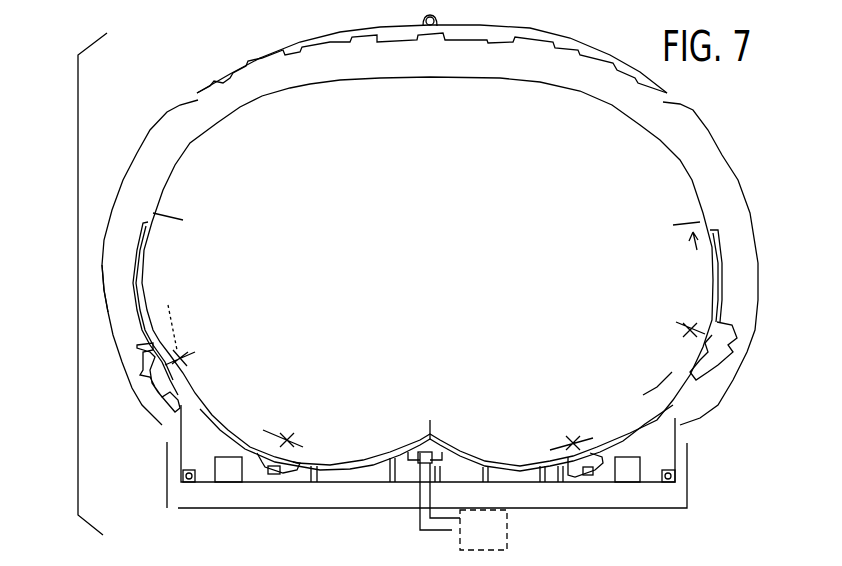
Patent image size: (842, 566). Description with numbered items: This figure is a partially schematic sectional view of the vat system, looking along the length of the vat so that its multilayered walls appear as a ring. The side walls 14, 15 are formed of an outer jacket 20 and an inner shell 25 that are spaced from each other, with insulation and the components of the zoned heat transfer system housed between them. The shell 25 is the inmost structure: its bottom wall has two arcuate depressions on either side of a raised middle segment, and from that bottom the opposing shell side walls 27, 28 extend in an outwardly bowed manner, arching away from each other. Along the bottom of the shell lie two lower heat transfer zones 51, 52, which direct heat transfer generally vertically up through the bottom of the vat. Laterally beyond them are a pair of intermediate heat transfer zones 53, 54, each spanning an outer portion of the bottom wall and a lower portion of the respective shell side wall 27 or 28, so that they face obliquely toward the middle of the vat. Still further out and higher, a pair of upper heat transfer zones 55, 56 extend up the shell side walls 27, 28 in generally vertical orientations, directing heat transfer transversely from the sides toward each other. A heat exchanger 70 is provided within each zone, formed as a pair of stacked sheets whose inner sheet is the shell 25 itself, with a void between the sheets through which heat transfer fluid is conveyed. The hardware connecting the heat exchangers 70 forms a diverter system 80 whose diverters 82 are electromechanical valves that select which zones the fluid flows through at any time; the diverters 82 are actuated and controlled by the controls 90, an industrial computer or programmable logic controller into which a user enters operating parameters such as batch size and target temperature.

The side wall 14 is at (122, 195).
The side wall 15 is at (743, 203).
The outer jacket 20 is at (722, 130).
The inner shell 25 is at (662, 135).
The shell side wall 27 is at (160, 203).
The shell side wall 28 is at (703, 212).
The lower heat transfer zone 51 is at (300, 445).
The lower heat transfer zone 52 is at (565, 447).
The intermediate heat transfer zone 53 is at (188, 368).
The intermediate heat transfer zone 54 is at (575, 445).
The upper heat transfer zone 55 is at (172, 234).
The upper heat transfer zone 56 is at (697, 315).
The heat exchanger 70 is at (143, 334).
The diverter system 80 is at (410, 471).
The diverter 82 is at (140, 392).
The controls 90 is at (495, 540).